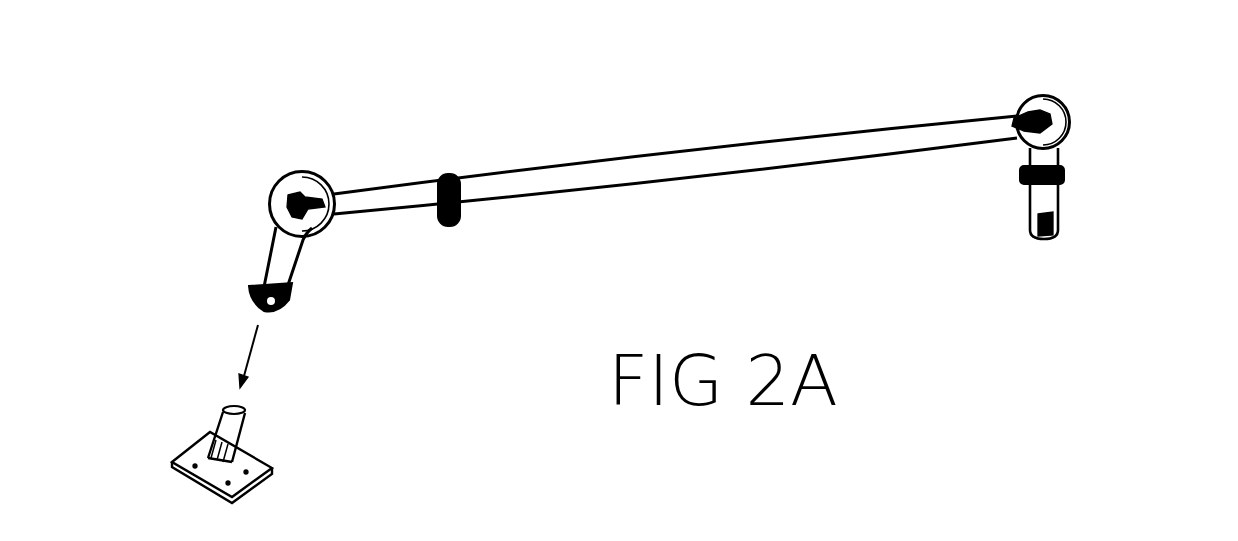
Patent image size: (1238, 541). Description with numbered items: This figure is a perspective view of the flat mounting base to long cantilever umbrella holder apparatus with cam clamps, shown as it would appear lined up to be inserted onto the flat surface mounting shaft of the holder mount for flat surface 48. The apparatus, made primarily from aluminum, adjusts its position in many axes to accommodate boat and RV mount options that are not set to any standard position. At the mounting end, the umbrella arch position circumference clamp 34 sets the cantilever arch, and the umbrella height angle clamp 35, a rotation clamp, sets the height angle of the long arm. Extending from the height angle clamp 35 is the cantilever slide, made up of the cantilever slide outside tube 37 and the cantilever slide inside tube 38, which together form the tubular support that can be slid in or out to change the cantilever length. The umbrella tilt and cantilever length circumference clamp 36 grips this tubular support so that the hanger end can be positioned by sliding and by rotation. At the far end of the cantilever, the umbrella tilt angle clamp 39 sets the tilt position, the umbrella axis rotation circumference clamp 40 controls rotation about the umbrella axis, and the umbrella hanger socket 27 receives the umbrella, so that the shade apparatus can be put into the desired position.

The umbrella hanger socket 27 is at (1078, 210).
The umbrella arch position circumference clamp 34 is at (232, 286).
The umbrella height angle clamp 35 is at (252, 198).
The umbrella tilt and cantilever length circumference clamp 36 is at (461, 158).
The cantilever slide outside tube 37 is at (569, 149).
The cantilever slide inside tube 38 is at (373, 166).
The umbrella tilt angle clamp 39 is at (1040, 76).
The umbrella axis rotation circumference clamp 40 is at (1079, 165).
The holder mount for flat surface 48 is at (261, 438).